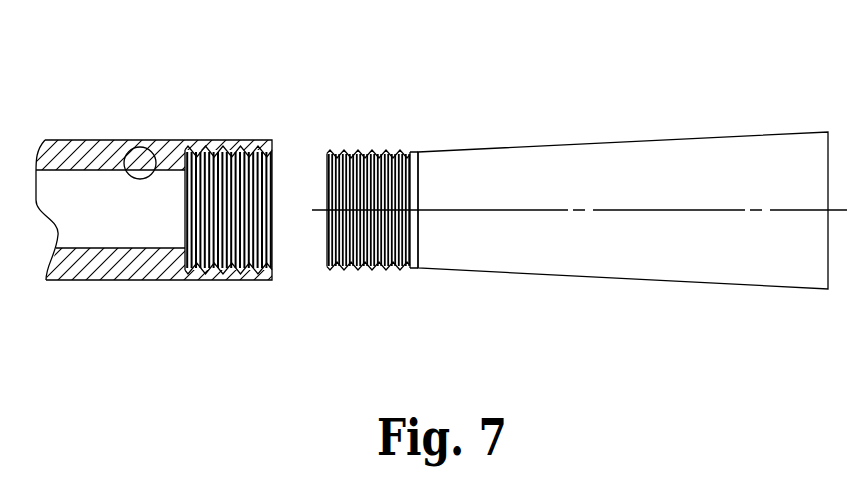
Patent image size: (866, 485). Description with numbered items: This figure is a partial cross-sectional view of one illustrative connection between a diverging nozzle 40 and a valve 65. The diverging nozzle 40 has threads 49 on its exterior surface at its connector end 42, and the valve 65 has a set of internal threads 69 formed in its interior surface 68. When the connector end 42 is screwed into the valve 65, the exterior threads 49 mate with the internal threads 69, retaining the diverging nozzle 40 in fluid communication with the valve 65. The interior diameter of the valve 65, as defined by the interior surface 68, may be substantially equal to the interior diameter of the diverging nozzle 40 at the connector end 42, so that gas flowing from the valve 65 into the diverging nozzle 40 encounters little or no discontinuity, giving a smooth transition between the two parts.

The diverging nozzle 40 is at (657, 71).
The connector end 42 is at (326, 160).
The threads 49 is at (377, 156).
The valve 65 is at (110, 325).
The interior surface 68 is at (148, 146).
The internal threads 69 is at (234, 150).